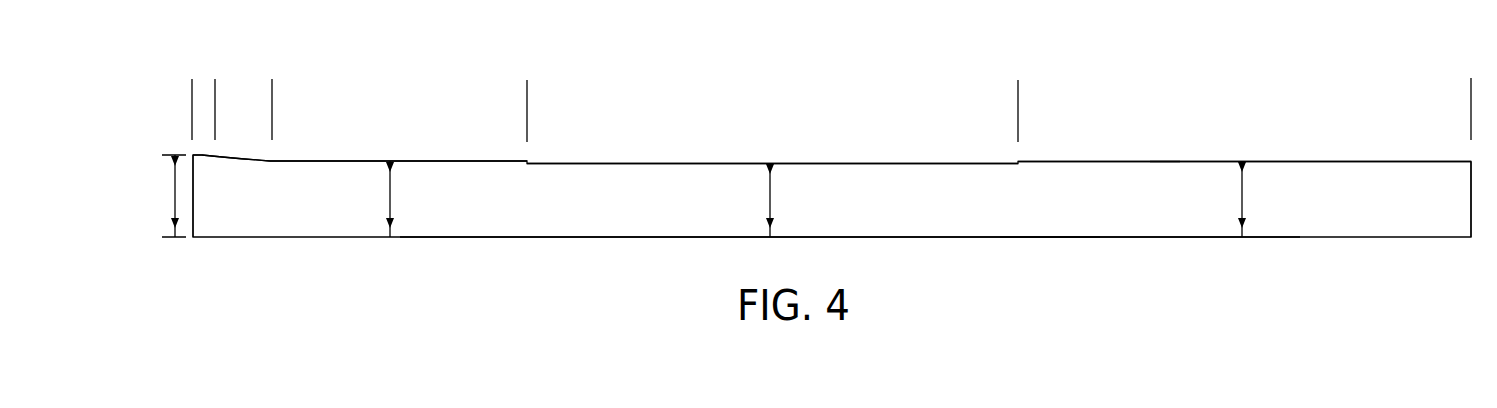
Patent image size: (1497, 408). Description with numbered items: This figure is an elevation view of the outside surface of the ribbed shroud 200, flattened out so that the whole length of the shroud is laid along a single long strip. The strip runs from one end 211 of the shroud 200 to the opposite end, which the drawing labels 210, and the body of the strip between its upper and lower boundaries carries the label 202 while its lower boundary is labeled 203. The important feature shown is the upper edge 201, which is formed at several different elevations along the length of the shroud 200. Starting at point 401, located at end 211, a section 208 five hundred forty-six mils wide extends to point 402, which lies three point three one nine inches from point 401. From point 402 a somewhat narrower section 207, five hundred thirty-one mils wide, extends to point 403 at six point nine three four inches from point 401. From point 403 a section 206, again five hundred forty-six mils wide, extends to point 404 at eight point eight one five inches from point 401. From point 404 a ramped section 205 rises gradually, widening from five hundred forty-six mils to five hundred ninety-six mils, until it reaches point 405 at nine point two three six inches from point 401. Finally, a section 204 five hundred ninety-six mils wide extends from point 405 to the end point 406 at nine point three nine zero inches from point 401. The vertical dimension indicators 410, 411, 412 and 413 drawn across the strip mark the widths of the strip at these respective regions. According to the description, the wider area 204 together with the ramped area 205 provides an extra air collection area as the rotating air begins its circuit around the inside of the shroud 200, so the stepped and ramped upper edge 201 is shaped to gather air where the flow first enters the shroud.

The ribbed shroud 200 is at (1280, 60).
The upper edge 201 is at (1172, 161).
The slider substrate 202 is at (621, 217).
The bottom surface 203 is at (1105, 237).
The section 204 is at (203, 152).
The section 205 is at (240, 158).
The section 206 is at (428, 161).
The section 207 is at (795, 163).
The section 208 is at (1107, 162).
The leading edge 210 is at (192, 210).
The end 211 is at (1471, 222).
The point 401 is at (1469, 107).
The point 402 is at (1019, 110).
The point 403 is at (528, 110).
The point 404 is at (273, 110).
The point 405 is at (215, 112).
The end point 406 is at (190, 90).
The leading edge height 410 is at (172, 189).
The first surface height 411 is at (392, 203).
The recessed surface height 412 is at (772, 205).
The trailing surface height 413 is at (1244, 203).